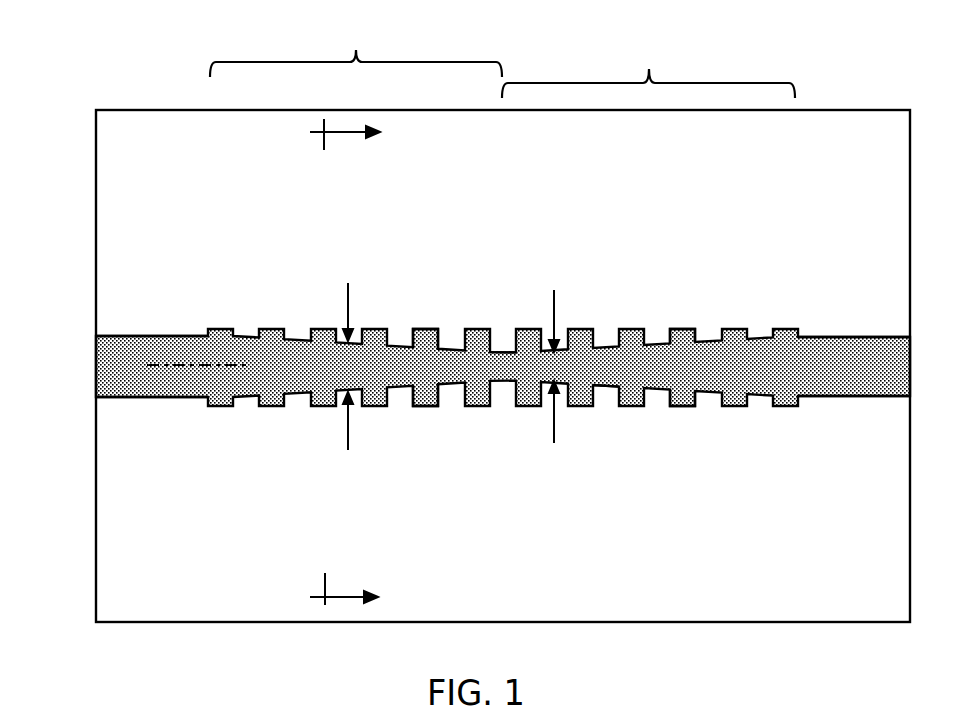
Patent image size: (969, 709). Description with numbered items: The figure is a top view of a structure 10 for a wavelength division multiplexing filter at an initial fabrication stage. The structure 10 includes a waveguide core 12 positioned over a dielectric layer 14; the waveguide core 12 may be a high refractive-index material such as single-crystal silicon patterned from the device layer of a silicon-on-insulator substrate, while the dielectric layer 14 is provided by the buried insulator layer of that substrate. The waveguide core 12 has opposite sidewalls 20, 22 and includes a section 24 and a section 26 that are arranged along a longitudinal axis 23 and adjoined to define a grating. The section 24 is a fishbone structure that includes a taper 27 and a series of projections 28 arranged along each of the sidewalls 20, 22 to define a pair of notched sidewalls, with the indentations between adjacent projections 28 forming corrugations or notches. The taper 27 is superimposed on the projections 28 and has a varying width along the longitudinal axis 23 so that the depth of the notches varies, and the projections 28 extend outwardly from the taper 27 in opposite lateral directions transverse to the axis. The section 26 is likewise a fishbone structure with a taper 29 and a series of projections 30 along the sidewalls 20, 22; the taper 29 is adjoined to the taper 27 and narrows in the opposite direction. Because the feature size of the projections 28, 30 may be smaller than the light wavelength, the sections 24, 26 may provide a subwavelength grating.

The structure 10 is at (472, 322).
The waveguide core 12 is at (760, 276).
The dielectric layer 14 is at (145, 593).
The sidewall 20 is at (607, 340).
The sidewall 22 is at (612, 400).
The longitudinal axis 23 is at (206, 365).
The section 24 is at (356, 50).
The section 26 is at (648, 70).
The taper 27 is at (285, 372).
The projections 28 is at (680, 337).
The taper 29 is at (740, 370).
The projections 30 is at (423, 337).